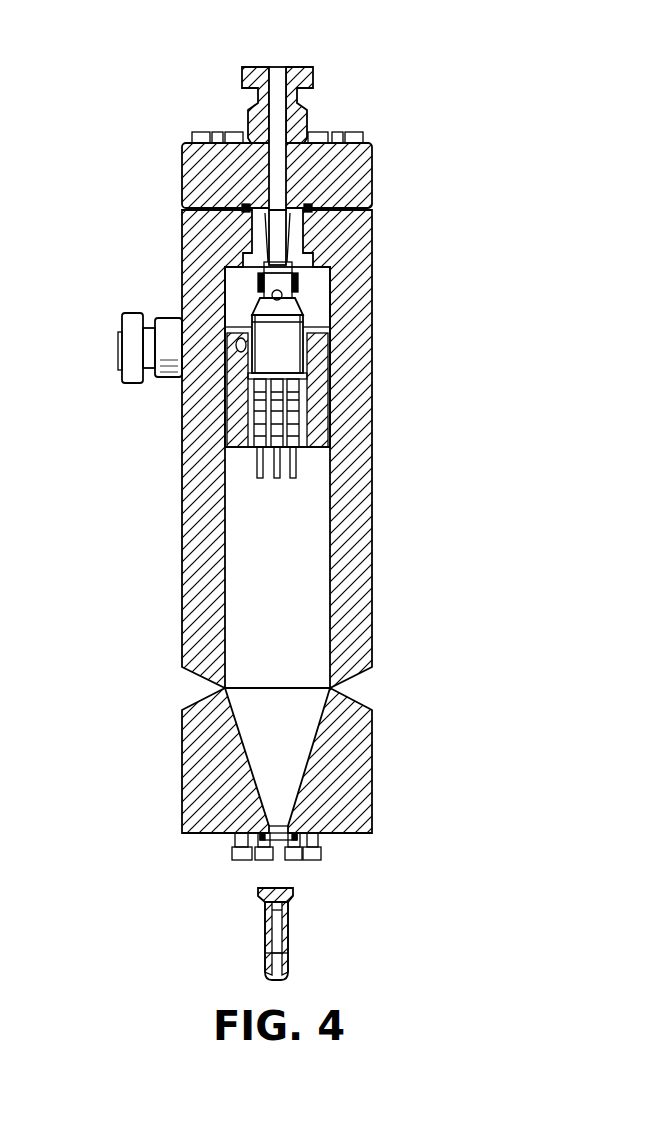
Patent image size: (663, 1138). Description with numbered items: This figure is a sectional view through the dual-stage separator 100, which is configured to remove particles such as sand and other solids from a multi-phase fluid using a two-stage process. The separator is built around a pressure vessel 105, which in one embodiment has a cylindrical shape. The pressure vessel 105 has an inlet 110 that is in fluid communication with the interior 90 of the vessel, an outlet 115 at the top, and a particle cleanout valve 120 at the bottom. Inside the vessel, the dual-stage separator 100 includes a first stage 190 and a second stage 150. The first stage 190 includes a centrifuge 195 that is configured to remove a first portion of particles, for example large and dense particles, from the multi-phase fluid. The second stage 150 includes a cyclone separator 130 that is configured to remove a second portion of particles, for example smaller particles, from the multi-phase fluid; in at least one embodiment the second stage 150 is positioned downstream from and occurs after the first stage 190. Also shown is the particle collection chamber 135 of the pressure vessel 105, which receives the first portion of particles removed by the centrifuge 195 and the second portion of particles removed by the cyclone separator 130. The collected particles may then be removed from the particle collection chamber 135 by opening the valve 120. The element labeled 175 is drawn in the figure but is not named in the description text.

The dual-stage separator 100 is at (89, 172).
The pressure vessel 105 is at (347, 528).
The inlet 110 is at (236, 350).
The outlet 115 is at (281, 67).
The particle cleanout valve 120 is at (280, 842).
The cyclone separator 130 is at (273, 343).
The particle collection chamber 135 is at (275, 747).
The second stage 150 is at (290, 403).
The inlet tube 175 is at (287, 245).
The first stage 190 is at (317, 357).
The centrifuge 195 is at (317, 417).
The interior 90 is at (240, 428).